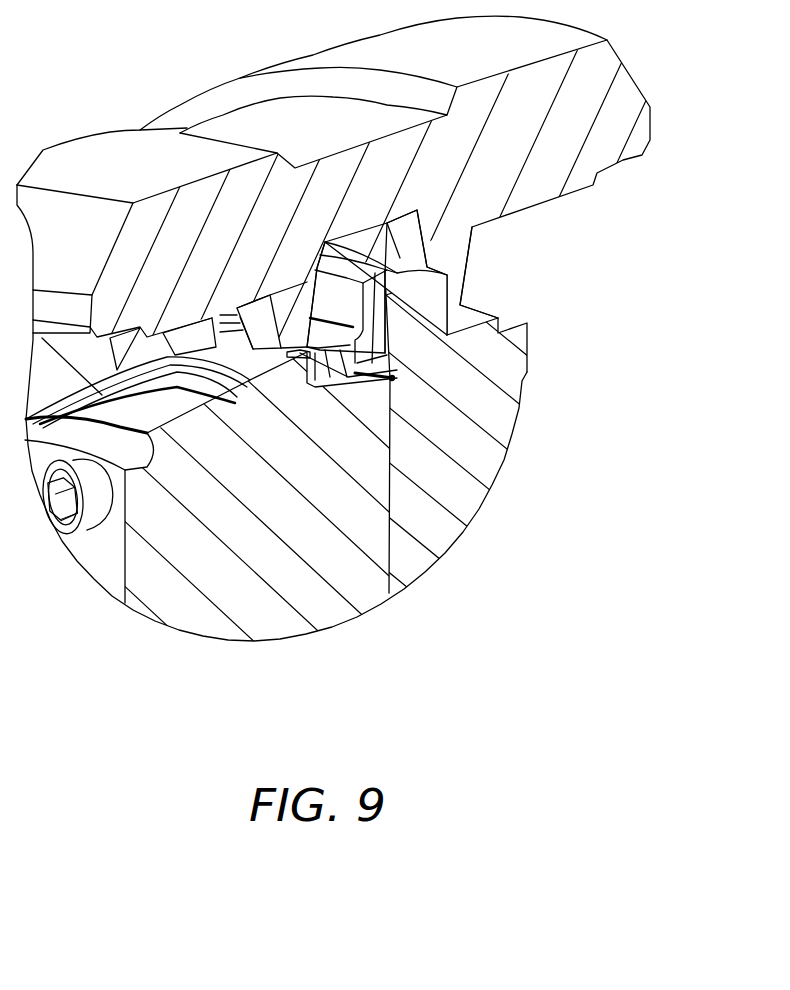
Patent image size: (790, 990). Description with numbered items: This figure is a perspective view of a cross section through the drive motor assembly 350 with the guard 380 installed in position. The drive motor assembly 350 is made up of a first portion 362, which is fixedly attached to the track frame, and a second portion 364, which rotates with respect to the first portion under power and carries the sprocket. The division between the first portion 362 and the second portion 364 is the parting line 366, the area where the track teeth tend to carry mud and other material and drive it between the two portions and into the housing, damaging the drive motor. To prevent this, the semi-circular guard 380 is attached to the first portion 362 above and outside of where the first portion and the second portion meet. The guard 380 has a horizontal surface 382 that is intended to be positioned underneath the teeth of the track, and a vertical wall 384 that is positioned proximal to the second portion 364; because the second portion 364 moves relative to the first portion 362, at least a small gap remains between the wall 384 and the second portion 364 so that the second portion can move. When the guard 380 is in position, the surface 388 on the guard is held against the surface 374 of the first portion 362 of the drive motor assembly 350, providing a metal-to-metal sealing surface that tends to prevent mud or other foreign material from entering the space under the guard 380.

The drive motor assembly 350 is at (520, 343).
The first portion 362 is at (247, 534).
The second portion 364 is at (473, 441).
The parting line 366 is at (390, 550).
The surface 374 is at (322, 380).
The guard 380 is at (353, 298).
The horizontal surface 382 is at (370, 358).
The vertical wall 384 is at (357, 317).
The surface 388 is at (373, 396).